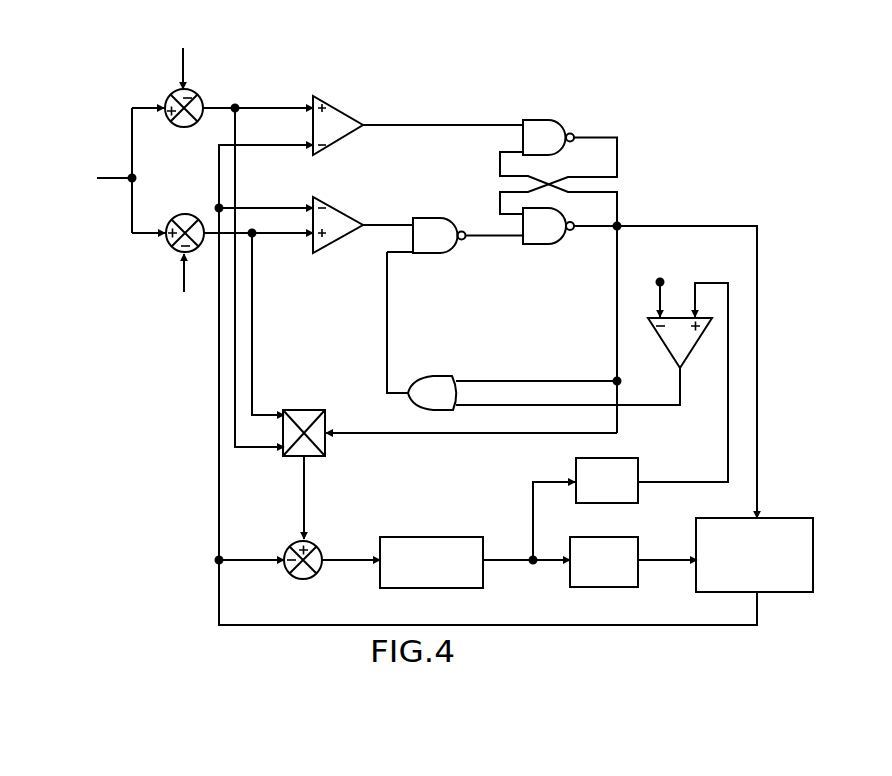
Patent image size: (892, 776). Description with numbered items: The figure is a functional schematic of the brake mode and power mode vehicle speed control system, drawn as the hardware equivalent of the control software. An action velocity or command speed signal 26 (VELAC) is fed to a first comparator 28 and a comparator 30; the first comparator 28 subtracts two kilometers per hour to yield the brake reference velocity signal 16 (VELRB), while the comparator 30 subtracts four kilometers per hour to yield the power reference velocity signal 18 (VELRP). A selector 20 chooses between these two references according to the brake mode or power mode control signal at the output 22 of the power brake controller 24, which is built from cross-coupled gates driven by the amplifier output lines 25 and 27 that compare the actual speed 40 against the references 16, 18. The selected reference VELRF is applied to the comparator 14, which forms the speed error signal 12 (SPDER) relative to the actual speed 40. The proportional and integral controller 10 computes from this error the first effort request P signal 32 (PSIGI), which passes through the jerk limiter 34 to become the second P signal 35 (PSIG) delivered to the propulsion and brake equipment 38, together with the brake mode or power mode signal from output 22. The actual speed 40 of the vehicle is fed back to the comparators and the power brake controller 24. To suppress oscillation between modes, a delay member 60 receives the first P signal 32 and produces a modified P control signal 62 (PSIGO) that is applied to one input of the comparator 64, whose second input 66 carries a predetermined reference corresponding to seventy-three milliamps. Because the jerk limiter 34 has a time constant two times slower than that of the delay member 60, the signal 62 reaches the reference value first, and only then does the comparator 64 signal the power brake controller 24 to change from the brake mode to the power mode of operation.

The proportional and integral controller 10 is at (420, 536).
The speed error signal 12 is at (347, 563).
The comparator 14 is at (307, 582).
The brake reference velocity signal 16 is at (276, 113).
The power reference velocity signal 18 is at (284, 231).
The selector 20 is at (311, 409).
The output 22 is at (712, 226).
The power brake controller 24 is at (479, 193).
The comparator output line B 25 is at (464, 124).
The action velocity signal 26 is at (113, 174).
The comparator output line P 27 is at (379, 224).
The first comparator 28 is at (203, 101).
The comparator 30 is at (180, 213).
The first effort request P signal 32 is at (518, 556).
The jerk limiter 34 is at (592, 536).
The second P signal 35 is at (672, 559).
The propulsion and brake equipment 38 is at (726, 517).
The actual speed 40 is at (358, 624).
The delay member 60 is at (623, 457).
The modified P control signal 62 is at (729, 297).
The comparator 64 is at (666, 347).
The second input 66 is at (660, 306).